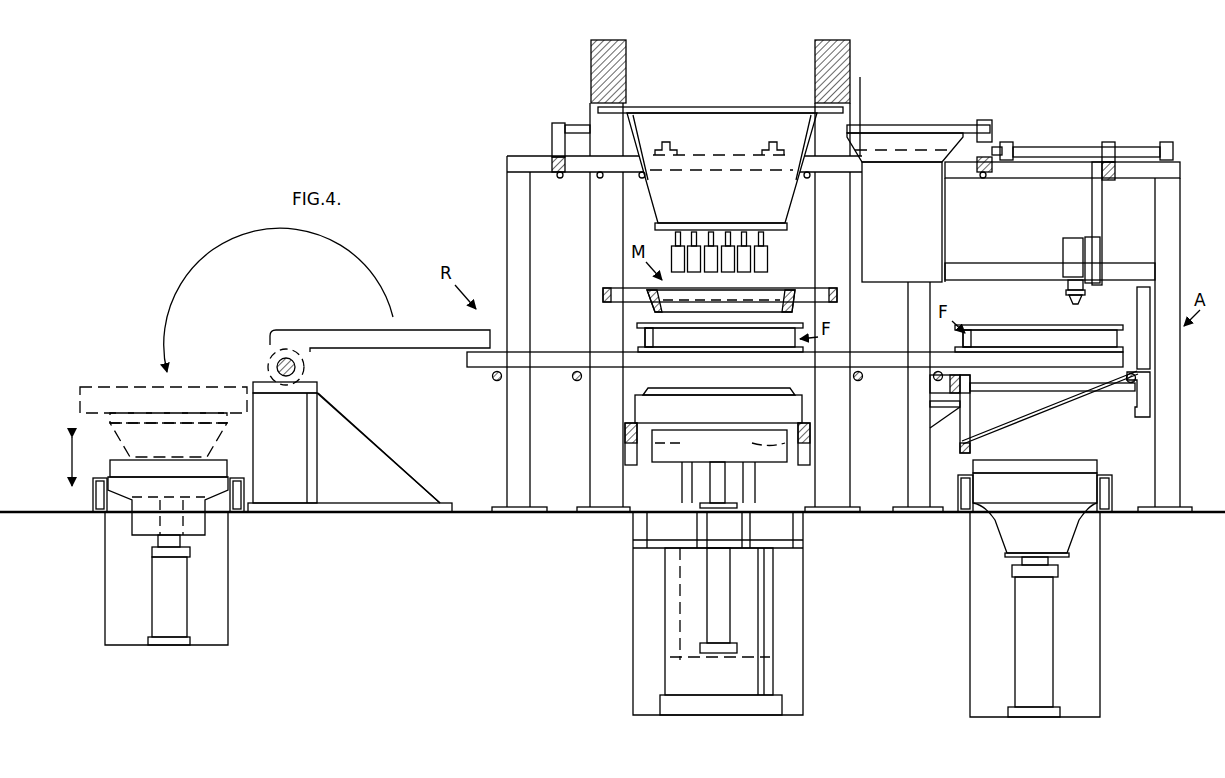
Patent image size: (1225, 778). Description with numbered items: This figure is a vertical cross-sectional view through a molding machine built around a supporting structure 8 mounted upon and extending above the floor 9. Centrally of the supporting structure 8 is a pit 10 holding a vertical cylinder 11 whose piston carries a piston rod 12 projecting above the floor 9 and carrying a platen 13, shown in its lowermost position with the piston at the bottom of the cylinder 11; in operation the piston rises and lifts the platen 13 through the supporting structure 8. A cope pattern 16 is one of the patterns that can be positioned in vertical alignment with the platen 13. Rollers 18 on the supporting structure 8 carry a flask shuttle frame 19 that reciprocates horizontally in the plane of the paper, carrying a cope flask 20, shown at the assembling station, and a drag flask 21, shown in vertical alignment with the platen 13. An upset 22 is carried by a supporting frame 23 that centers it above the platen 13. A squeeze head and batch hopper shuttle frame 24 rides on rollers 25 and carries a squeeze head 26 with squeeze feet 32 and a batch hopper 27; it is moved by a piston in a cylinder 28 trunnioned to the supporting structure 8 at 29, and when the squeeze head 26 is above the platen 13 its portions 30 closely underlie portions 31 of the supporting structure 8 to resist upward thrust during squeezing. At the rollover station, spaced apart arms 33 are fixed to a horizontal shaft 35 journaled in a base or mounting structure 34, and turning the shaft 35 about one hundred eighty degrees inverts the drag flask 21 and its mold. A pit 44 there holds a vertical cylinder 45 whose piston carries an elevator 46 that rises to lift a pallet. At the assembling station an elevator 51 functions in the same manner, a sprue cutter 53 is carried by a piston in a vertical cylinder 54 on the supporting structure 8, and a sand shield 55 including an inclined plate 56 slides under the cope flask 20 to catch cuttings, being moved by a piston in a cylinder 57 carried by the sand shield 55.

The supporting structure 8 is at (512, 225).
The floor 9 is at (1222, 512).
The pit 10 is at (762, 675).
The vertical cylinder 11 is at (724, 628).
The piston rod 12 is at (722, 483).
The platen 13 is at (692, 452).
The cope pattern 16 is at (722, 421).
The rollers 18 is at (497, 382).
The flask shuttle frame 19 is at (565, 356).
The cope flask 20 is at (1035, 349).
The drag flask 21 is at (751, 349).
The upset 22 is at (765, 290).
The supporting frame 23 is at (813, 290).
The squeeze head and batch hopper shuttle frame 24 is at (848, 135).
The rollers 25 is at (568, 178).
The squeeze head 26 is at (724, 201).
The batch hopper 27 is at (915, 233).
The cylinder 28 is at (1048, 152).
The trunnion 29 is at (1110, 142).
The portions of squeeze head 30 is at (842, 108).
The portions of supporting structure 31 is at (840, 66).
The squeeze feet 32 is at (768, 260).
The arms 33 is at (383, 338).
The base or mounting structure 34 is at (290, 488).
The horizontal shaft 35 is at (296, 364).
The pit 44 is at (228, 592).
The vertical cylinder 45 is at (181, 607).
The elevator 46 is at (173, 494).
The elevator 51 is at (1058, 540).
The sprue cutter 53 is at (1068, 298).
The vertical cylinder 54 is at (1068, 256).
The sand shield 55 is at (1150, 346).
The inclined plate 56 is at (1012, 411).
The cylinder 57 is at (1150, 374).